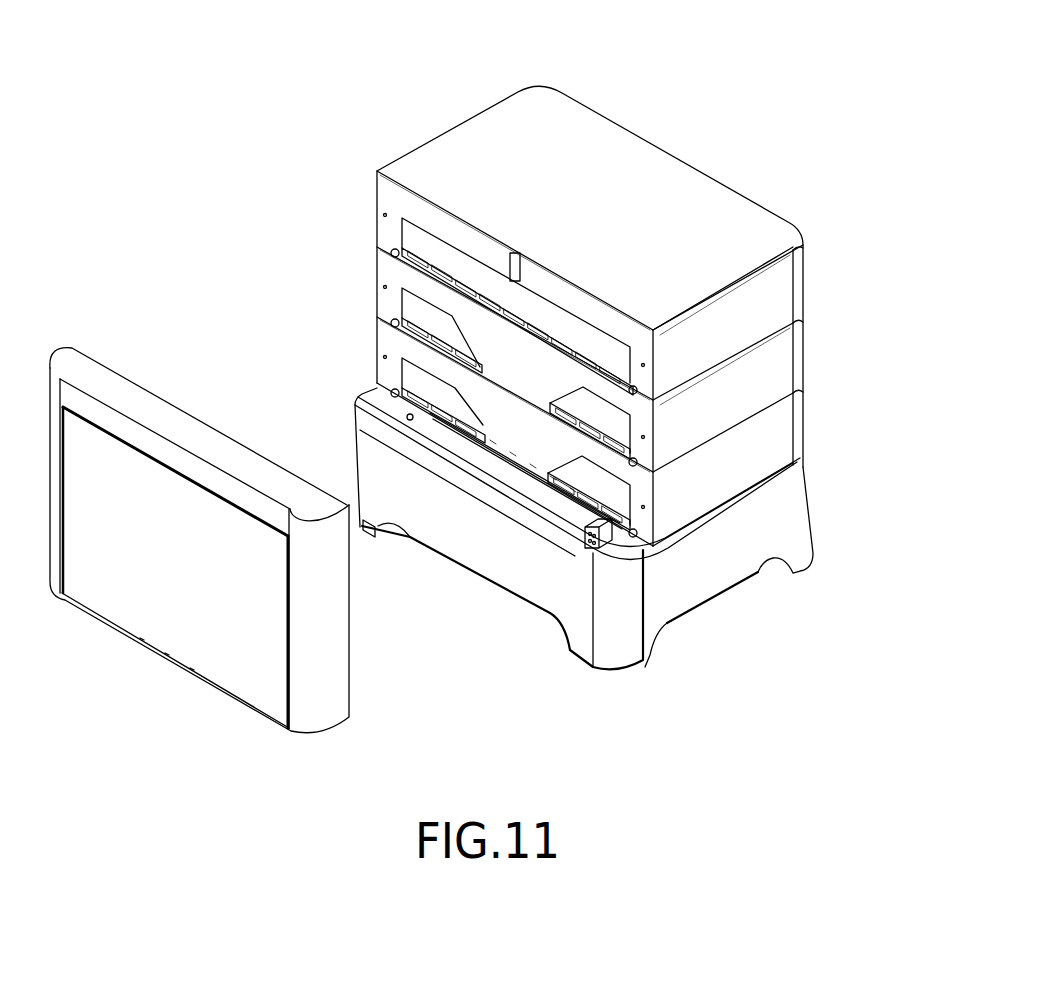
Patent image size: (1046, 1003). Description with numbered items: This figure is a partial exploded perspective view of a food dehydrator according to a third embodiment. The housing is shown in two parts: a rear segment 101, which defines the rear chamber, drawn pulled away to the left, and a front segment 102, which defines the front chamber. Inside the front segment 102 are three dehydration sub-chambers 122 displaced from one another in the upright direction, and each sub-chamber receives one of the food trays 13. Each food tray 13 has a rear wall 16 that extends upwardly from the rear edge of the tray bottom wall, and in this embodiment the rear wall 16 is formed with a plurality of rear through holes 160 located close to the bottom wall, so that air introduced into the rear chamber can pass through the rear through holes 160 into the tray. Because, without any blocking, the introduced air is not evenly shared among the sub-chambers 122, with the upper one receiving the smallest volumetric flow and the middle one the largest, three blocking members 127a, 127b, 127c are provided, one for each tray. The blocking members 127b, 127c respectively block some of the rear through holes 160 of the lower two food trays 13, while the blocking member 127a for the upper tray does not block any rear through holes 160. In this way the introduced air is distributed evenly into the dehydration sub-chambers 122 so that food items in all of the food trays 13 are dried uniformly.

The rear segment 101 is at (140, 397).
The front segment 102 is at (517, 125).
The food tray 13 is at (807, 275).
The dehydration sub-chamber 122 is at (757, 293).
The blocking member 127a is at (570, 305).
The blocking member 127b is at (402, 275).
The blocking member 127c is at (400, 346).
The rear wall 16 is at (417, 233).
The rear through holes 160 is at (457, 273).